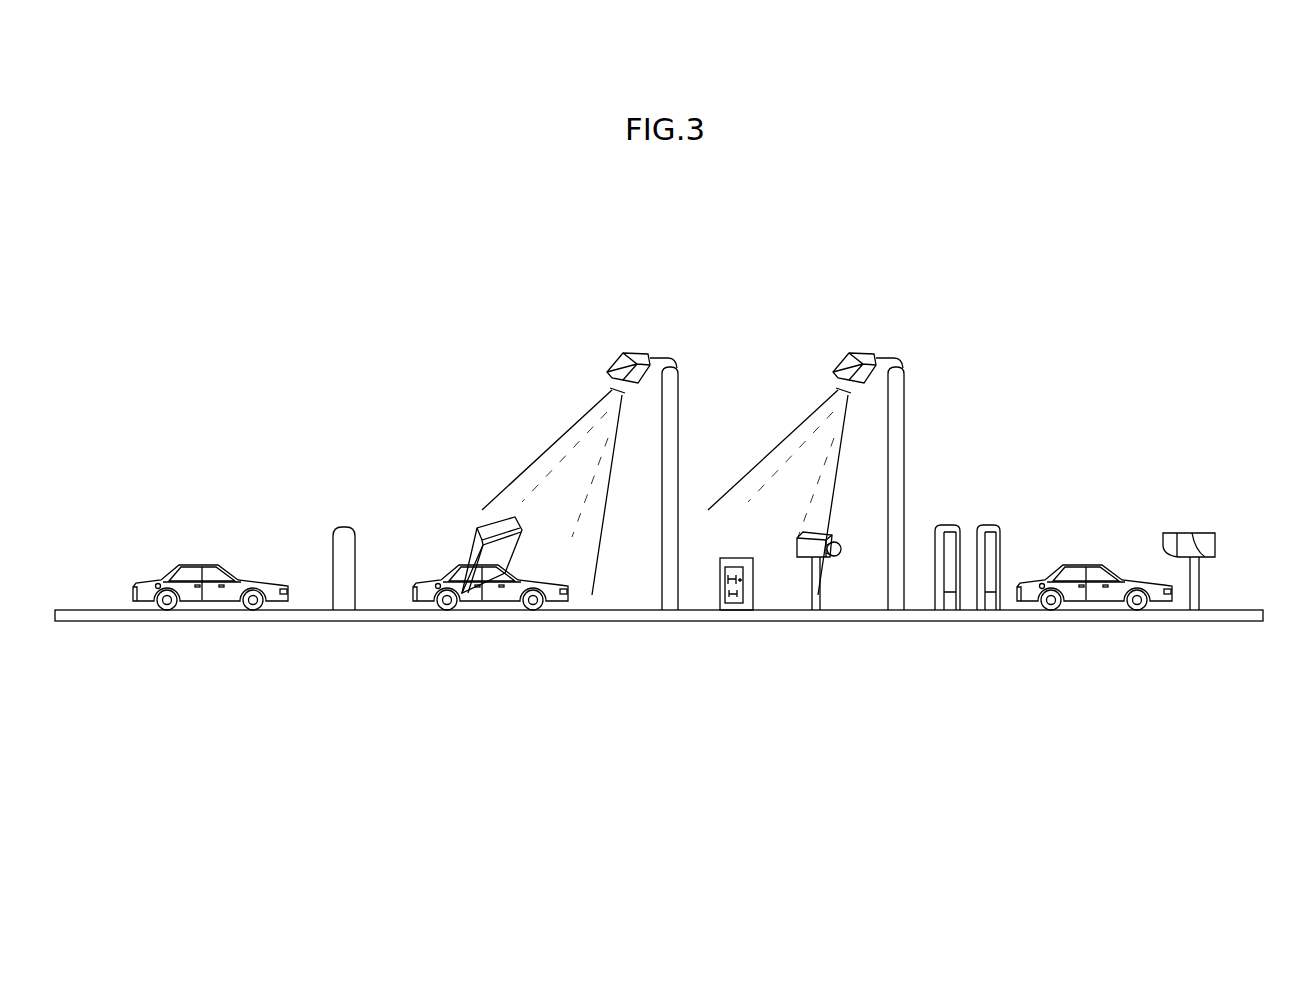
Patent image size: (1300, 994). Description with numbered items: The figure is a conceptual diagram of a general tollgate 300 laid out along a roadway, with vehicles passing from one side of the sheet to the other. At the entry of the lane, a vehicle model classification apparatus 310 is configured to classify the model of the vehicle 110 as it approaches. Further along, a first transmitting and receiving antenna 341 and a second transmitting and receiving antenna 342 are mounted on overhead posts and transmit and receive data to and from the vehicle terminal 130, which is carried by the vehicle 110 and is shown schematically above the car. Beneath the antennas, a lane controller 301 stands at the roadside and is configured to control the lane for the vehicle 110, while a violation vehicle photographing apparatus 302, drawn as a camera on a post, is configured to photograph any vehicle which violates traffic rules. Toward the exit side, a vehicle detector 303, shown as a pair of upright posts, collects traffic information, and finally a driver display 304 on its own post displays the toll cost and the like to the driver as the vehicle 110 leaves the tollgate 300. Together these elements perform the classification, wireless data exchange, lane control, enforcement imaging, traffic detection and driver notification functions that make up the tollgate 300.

The tollgate 300 is at (170, 247).
The vehicle 110 is at (140, 582).
The vehicle model classification apparatus 310 is at (343, 525).
The vehicle terminal 130 is at (503, 525).
The first transmitting and receiving antenna 341 is at (635, 350).
The second transmitting and receiving antenna 342 is at (862, 357).
The lane controller 301 is at (755, 588).
The violation vehicle photographing apparatus 302 is at (840, 555).
The vehicle detector 303 is at (1000, 577).
The driver display 304 is at (1215, 547).